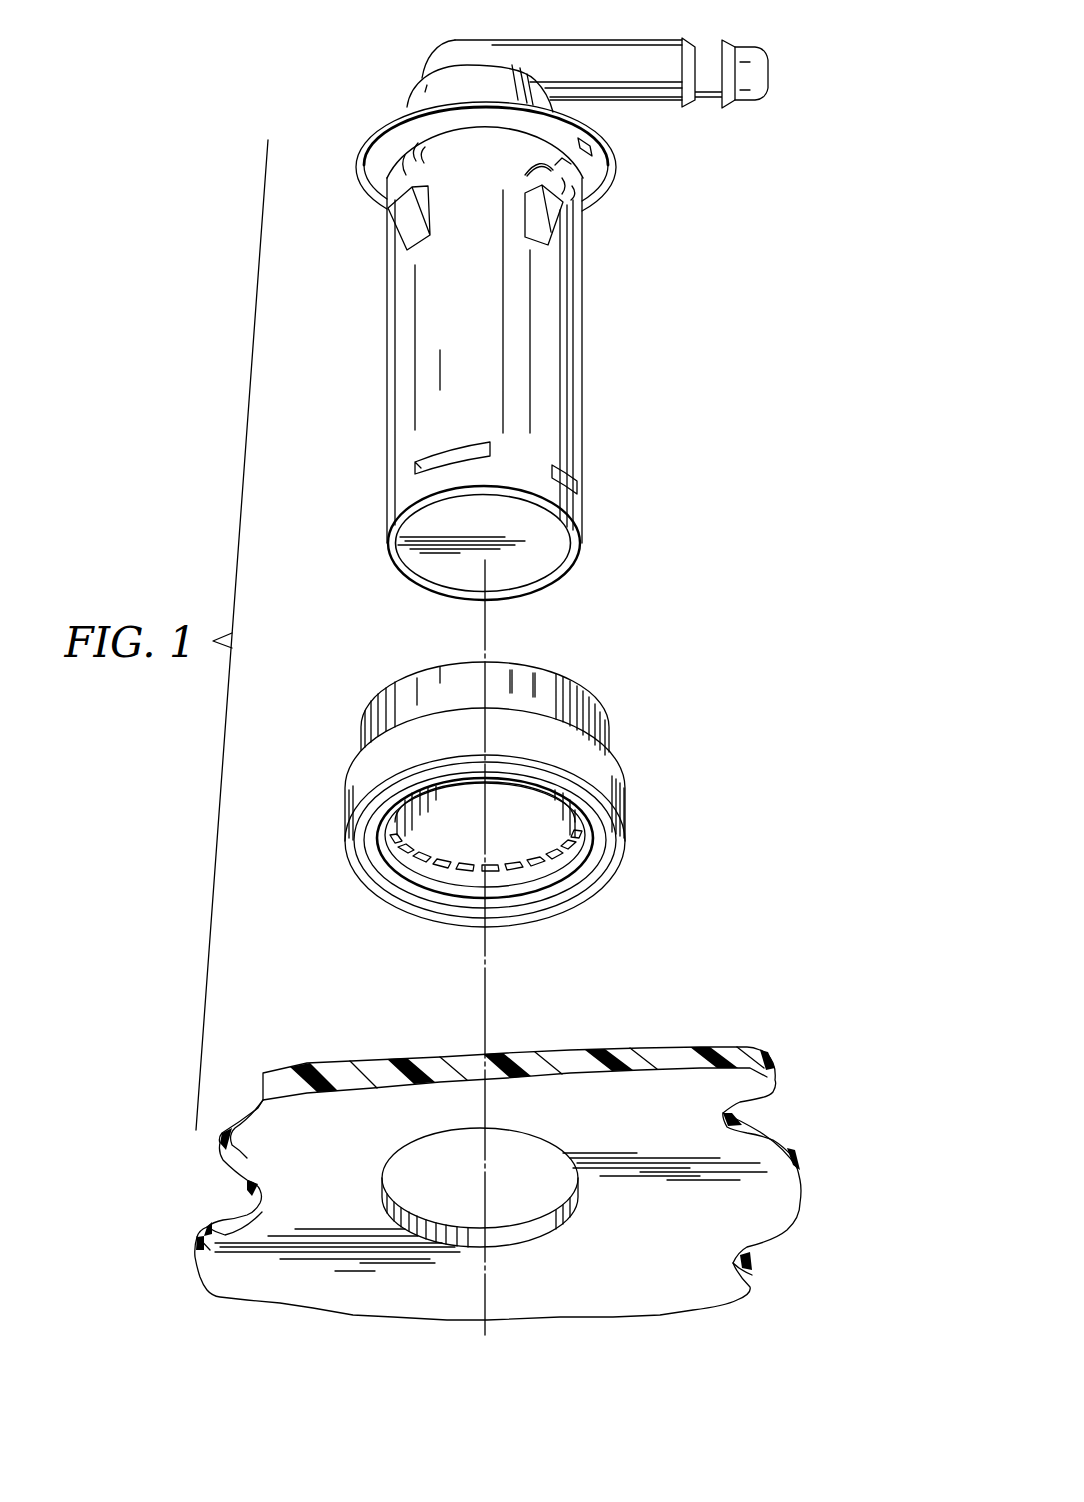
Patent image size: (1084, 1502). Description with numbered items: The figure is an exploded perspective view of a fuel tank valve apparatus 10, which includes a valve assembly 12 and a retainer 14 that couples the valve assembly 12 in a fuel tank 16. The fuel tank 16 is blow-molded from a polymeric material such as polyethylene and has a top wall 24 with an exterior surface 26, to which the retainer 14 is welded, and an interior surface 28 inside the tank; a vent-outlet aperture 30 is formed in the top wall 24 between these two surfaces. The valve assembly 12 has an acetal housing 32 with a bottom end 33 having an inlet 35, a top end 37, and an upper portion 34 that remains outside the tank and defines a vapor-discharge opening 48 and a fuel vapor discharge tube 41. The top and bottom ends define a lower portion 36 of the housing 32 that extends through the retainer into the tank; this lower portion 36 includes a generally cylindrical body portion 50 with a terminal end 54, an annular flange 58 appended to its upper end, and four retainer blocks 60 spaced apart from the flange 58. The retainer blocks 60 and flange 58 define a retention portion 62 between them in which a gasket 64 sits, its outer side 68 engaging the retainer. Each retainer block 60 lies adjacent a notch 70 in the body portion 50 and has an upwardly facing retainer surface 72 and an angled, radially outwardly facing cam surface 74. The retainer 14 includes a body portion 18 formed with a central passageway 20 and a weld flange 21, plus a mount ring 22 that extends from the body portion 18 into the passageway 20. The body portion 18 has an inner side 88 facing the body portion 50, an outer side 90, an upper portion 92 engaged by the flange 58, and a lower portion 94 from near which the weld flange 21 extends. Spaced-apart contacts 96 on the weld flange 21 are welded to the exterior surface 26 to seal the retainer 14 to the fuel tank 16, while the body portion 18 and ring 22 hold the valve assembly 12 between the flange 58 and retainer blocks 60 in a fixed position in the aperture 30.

The fuel tank valve apparatus 10 is at (315, 506).
The valve assembly 12 is at (684, 438).
The retainer 14 is at (663, 811).
The fuel tank 16 is at (748, 1031).
The body portion 18 is at (568, 708).
The central passageway 20 is at (436, 832).
The weld flange 21 is at (337, 772).
The mount ring 22 is at (552, 855).
The top wall 24 is at (346, 1114).
The exterior surface 26 is at (613, 1049).
The interior surface 28 is at (737, 1088).
The vent-outlet aperture 30 is at (433, 1153).
The housing 32 is at (549, 366).
The bottom end 33 is at (388, 525).
The upper portion 34 is at (585, 58).
The inlet 35 is at (425, 573).
The lower portion 36 is at (376, 380).
The top end 37 is at (398, 117).
The fuel vapor discharge tube 41 is at (655, 54).
The vapor-discharge opening 48 is at (768, 75).
The body portion 50 is at (493, 323).
The terminal end 54 is at (580, 550).
The annular flange 58 is at (592, 182).
The retainer blocks 60 is at (376, 232).
The retention portion 62 is at (492, 185).
The gasket 64 is at (567, 157).
The outer side 68 is at (420, 147).
The notches 70 is at (444, 191).
The retainer surface 72 is at (393, 185).
The cam surface 74 is at (408, 252).
The inner side 88 is at (503, 840).
The outer side 90 is at (445, 685).
The upper portion 92 is at (547, 672).
The lower portion 94 is at (537, 863).
The contacts 96 is at (352, 862).